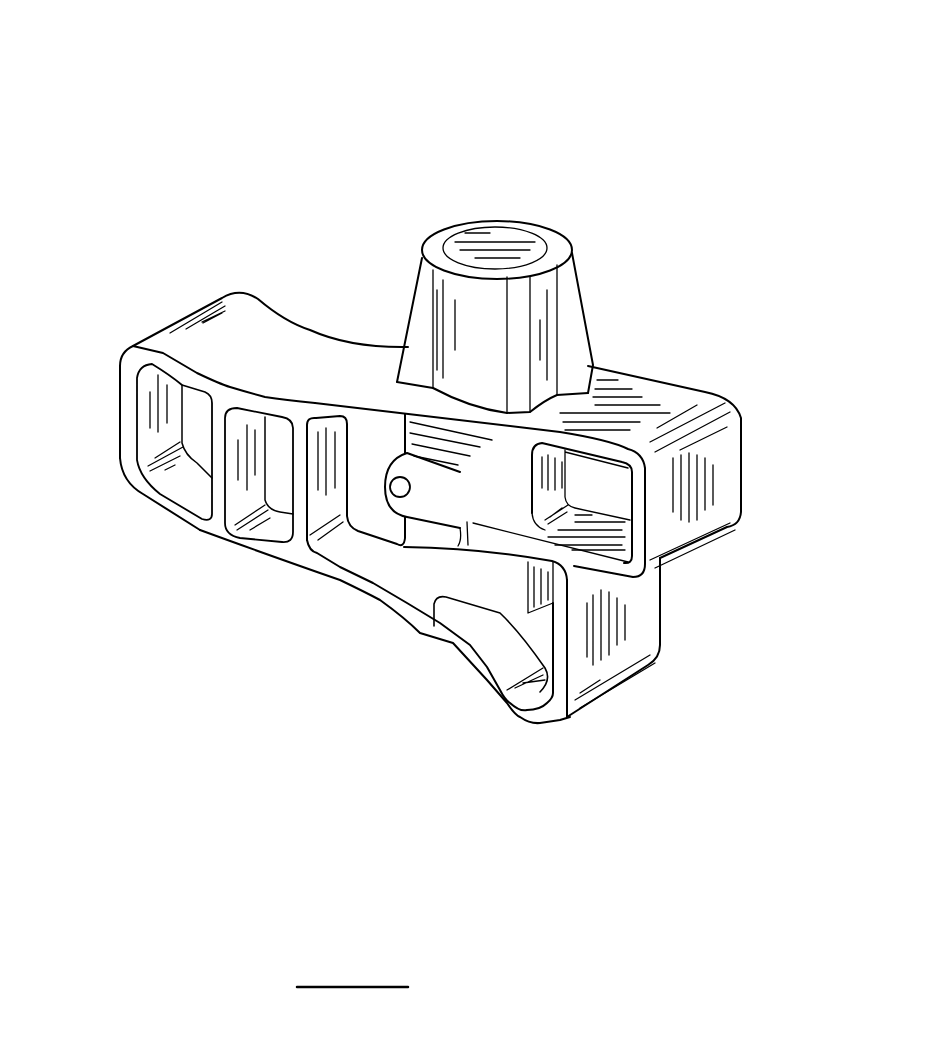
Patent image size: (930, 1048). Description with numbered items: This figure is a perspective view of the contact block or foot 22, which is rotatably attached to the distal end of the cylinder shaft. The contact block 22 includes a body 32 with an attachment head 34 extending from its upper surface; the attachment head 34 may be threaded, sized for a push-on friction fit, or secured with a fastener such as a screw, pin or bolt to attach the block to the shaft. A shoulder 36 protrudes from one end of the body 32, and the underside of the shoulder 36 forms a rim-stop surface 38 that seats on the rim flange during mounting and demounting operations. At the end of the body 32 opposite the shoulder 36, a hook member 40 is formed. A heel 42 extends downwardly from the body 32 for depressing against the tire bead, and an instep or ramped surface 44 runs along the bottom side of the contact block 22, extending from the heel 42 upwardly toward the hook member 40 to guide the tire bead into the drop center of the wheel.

The contact block 22 is at (243, 205).
The body 32 is at (455, 509).
The attachment head 34 is at (582, 292).
The shoulder 36 is at (720, 463).
The rim-stop surface 38 is at (612, 572).
The hook member 40 is at (227, 345).
The heel 42 is at (597, 676).
The ramped surface 44 is at (340, 580).